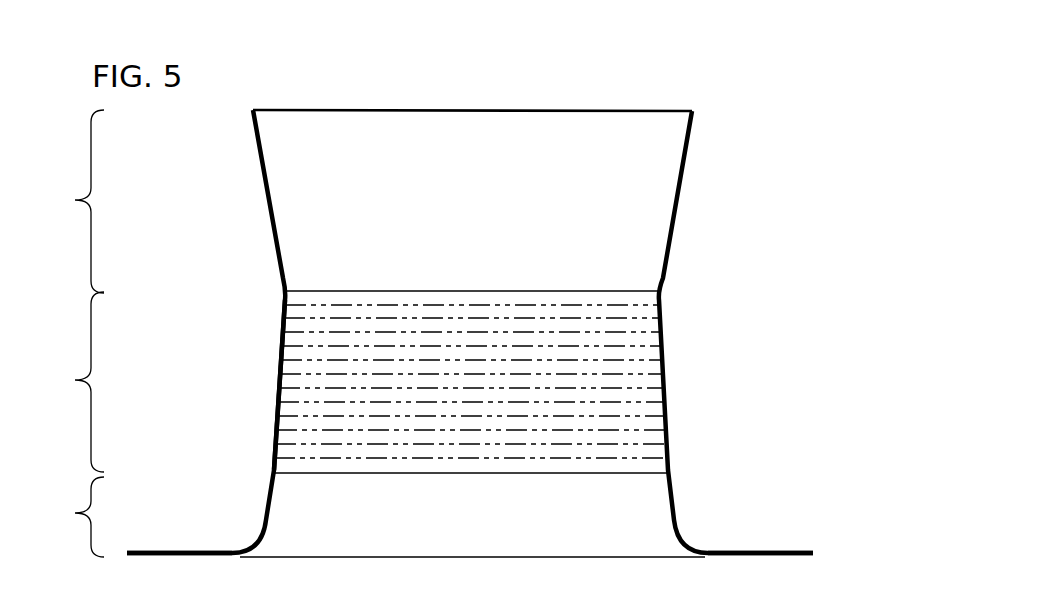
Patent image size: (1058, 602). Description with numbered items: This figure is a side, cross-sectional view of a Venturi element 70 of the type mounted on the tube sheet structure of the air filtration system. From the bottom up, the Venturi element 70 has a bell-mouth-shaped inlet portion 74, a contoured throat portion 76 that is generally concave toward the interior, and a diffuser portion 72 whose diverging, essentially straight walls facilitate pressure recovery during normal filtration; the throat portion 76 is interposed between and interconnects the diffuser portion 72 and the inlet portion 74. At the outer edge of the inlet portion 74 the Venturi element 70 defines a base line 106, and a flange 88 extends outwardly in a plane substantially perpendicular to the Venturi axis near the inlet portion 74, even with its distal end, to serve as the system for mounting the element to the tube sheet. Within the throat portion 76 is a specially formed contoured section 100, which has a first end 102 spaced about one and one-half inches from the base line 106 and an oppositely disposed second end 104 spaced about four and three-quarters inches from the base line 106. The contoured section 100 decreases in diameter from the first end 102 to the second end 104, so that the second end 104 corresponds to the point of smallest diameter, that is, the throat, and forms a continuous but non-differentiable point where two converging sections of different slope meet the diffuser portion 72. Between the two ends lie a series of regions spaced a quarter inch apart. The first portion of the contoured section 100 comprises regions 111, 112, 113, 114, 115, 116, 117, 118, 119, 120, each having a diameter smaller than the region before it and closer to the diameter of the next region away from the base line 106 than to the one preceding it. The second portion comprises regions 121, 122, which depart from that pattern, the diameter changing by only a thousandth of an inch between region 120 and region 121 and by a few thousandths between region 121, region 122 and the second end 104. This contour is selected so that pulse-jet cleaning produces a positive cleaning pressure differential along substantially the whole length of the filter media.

The Venturi element 70 is at (722, 152).
The diffuser portion 72 is at (67, 201).
The contoured throat portion 76 is at (67, 382).
The inlet portion 74 is at (67, 517).
The contoured section 100 is at (244, 374).
The second end 104 is at (663, 290).
The region 122 is at (660, 305).
The region 121 is at (660, 318).
The region 120 is at (660, 332).
The region 119 is at (661, 346).
The region 118 is at (661, 360).
The region 117 is at (662, 374).
The region 116 is at (663, 388).
The region 115 is at (664, 402).
The region 114 is at (665, 416).
The region 113 is at (666, 430).
The region 112 is at (667, 444).
The region 111 is at (668, 458).
The first end 102 is at (670, 475).
The flange 88 is at (184, 557).
The base line 106 is at (805, 558).